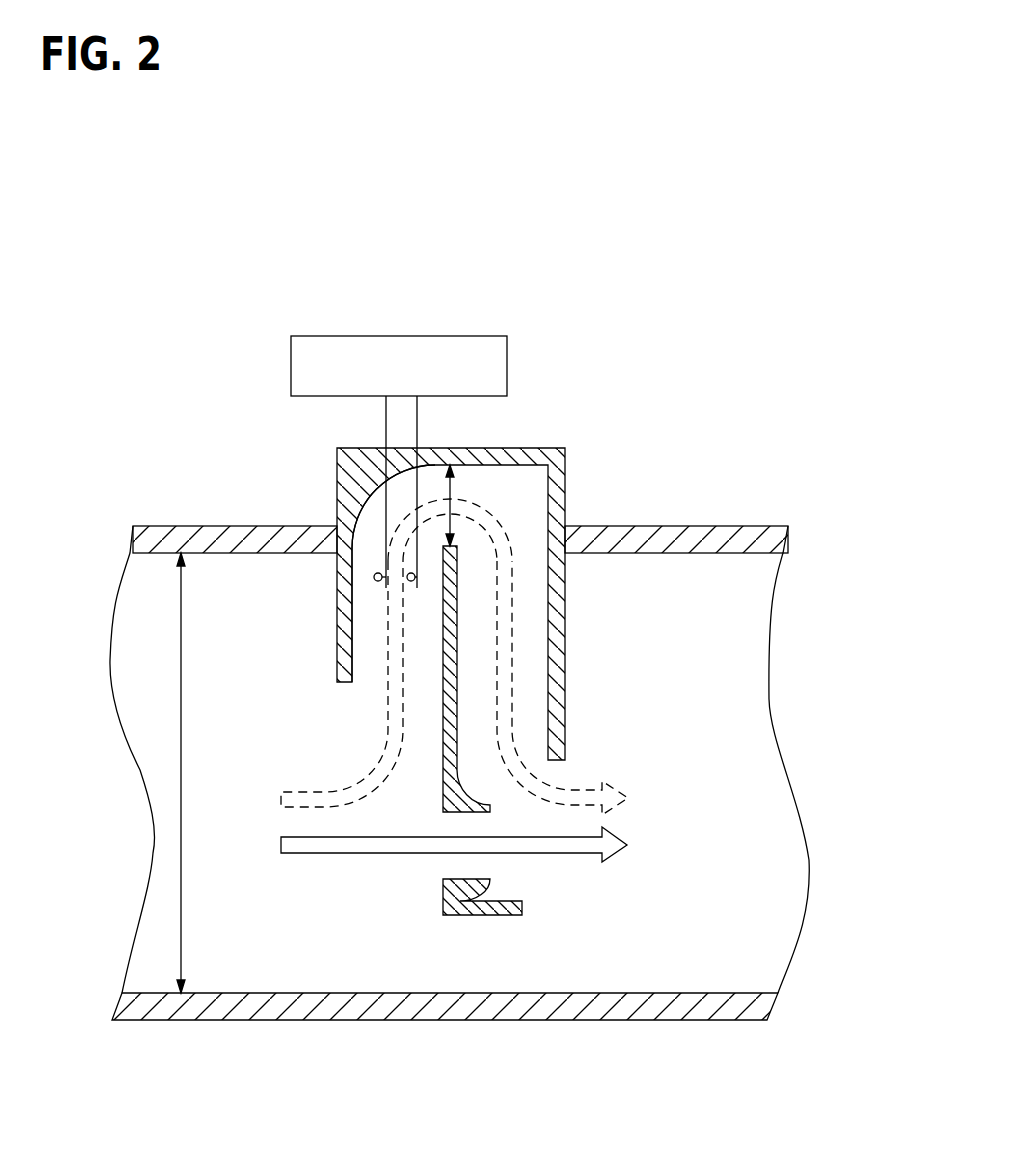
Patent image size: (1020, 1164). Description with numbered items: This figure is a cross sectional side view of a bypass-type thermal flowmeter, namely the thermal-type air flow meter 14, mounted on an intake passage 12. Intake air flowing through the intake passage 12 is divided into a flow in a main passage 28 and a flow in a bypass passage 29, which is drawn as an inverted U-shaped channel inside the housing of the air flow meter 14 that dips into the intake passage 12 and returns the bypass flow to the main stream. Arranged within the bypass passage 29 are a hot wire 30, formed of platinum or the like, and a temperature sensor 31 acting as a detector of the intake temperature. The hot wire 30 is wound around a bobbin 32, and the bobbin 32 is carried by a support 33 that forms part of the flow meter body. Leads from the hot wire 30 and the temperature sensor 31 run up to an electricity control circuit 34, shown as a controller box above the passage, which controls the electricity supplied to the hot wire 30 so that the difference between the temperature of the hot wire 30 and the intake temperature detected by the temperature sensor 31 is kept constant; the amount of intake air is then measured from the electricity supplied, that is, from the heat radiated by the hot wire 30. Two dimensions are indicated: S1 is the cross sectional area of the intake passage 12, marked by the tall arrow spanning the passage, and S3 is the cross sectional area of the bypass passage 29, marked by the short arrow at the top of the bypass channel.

The intake passage 12 is at (688, 527).
The thermal-type air flow meter 14 is at (568, 493).
The main passage 28 is at (555, 853).
The bypass passage 29 is at (513, 648).
The hot wire 30 is at (408, 583).
The temperature sensor 31 is at (374, 577).
The bobbin 32 is at (408, 552).
The support 33 is at (338, 455).
The electricity control circuit 34 is at (463, 336).
The cross sectional area of the intake passage S1 is at (181, 686).
The cross sectional area of the bypass passage S3 is at (450, 490).